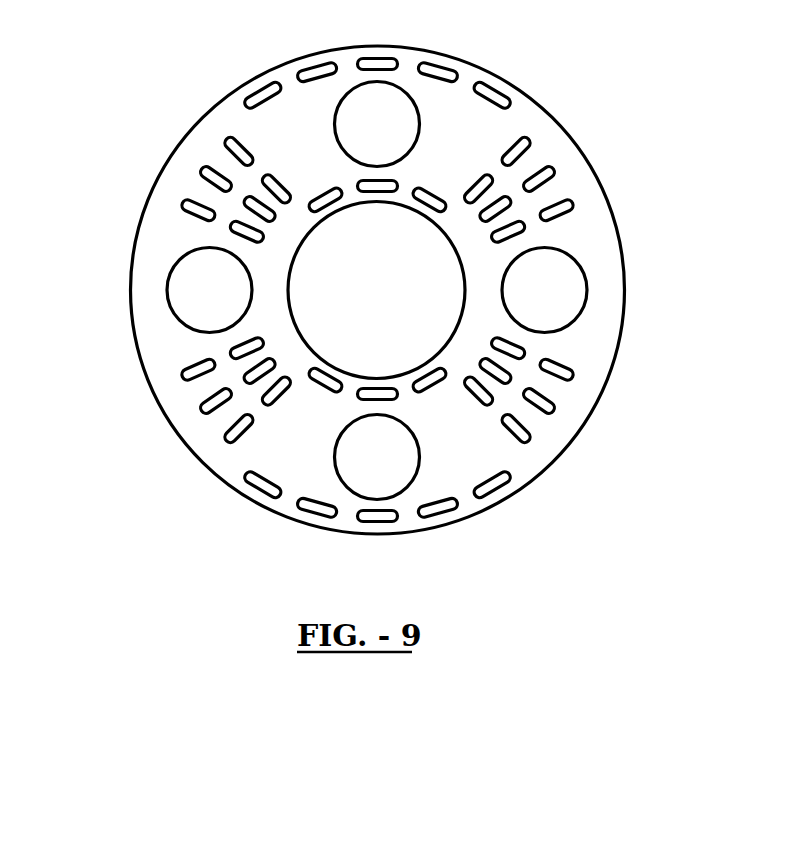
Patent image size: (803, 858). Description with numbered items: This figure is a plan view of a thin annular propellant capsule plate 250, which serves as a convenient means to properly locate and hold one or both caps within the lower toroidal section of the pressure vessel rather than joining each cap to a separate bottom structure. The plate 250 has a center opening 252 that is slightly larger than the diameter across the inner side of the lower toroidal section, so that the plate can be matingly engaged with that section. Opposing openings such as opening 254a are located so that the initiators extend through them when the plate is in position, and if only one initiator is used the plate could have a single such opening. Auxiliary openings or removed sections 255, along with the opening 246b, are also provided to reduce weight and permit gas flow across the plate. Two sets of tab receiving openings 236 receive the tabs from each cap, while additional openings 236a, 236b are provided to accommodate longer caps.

The annular plate 250 is at (540, 73).
The tab receiving openings 236 is at (252, 87).
The additional openings 236a is at (172, 153).
The additional openings 236b is at (195, 213).
The center opening 252 is at (460, 303).
The opposing opening 254a is at (452, 138).
The auxiliary openings 255 is at (168, 286).
The bottom opening 246b is at (345, 473).